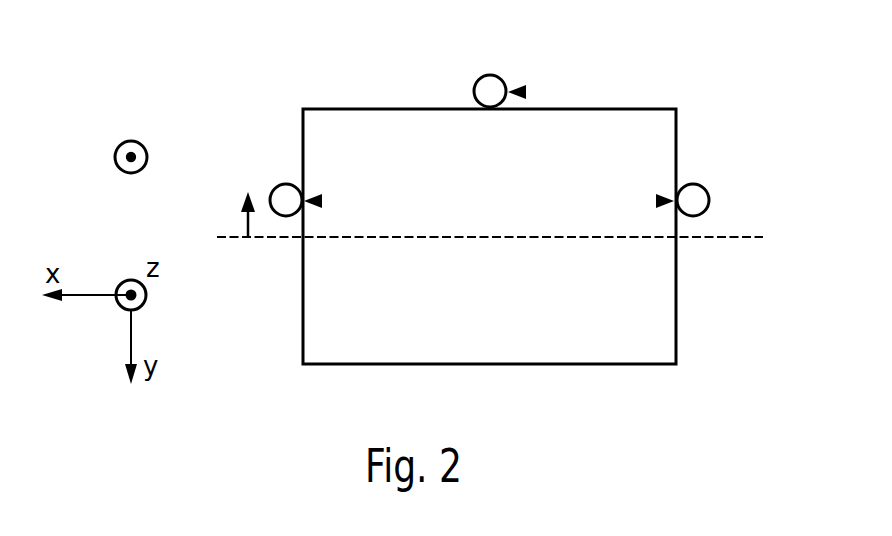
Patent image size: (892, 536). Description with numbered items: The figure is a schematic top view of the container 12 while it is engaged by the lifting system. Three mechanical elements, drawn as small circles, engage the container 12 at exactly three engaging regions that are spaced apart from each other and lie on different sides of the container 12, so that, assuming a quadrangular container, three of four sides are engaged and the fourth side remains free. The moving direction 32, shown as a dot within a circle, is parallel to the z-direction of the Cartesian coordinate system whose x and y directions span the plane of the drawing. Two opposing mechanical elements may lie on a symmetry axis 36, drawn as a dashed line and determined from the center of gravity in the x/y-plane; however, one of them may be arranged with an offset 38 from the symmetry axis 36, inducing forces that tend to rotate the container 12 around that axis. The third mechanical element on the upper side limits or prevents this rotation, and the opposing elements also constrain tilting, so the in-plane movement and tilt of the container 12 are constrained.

The container 12 is at (678, 137).
The moving direction 32 is at (127, 141).
The symmetry axis 36 is at (737, 240).
The offset 38 is at (247, 228).